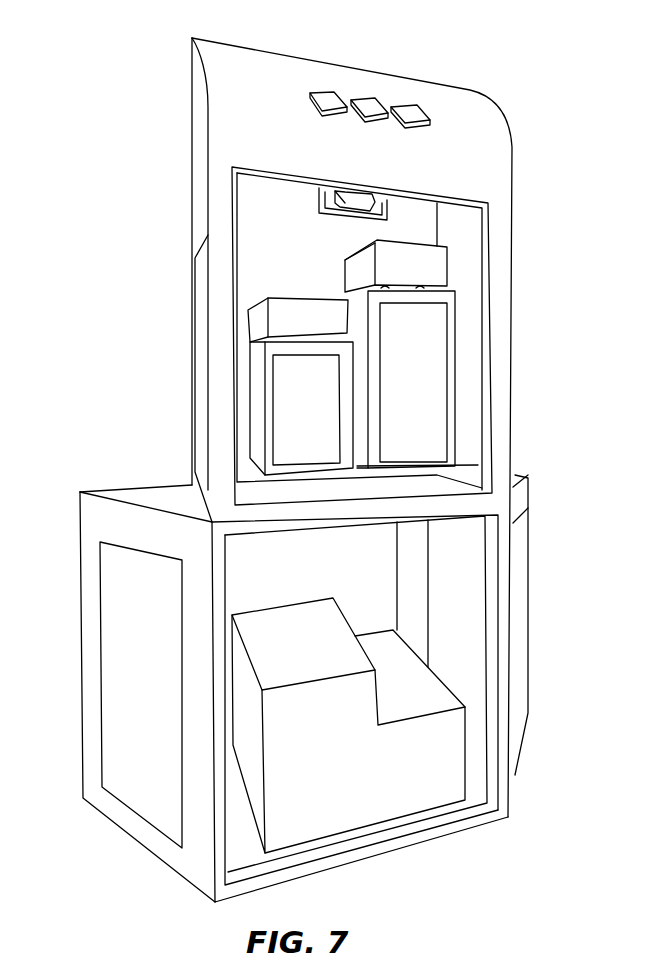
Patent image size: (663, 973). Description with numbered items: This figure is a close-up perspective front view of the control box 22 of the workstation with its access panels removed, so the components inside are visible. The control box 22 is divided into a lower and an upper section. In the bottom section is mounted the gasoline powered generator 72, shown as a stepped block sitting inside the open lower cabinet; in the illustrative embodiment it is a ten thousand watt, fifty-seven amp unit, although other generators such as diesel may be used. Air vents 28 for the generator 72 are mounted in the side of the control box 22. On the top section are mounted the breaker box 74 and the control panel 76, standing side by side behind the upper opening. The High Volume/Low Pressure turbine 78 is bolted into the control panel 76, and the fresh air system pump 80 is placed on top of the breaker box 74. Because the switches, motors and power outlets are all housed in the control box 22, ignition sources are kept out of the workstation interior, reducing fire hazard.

The control box 22 is at (225, 152).
The air vents 28 is at (122, 652).
The gasoline powered generator 72 is at (450, 778).
The breaker box 74 is at (427, 367).
The control panel 76 is at (295, 422).
The HVLP turbine 78 is at (297, 317).
The fresh air system pump 80 is at (427, 268).